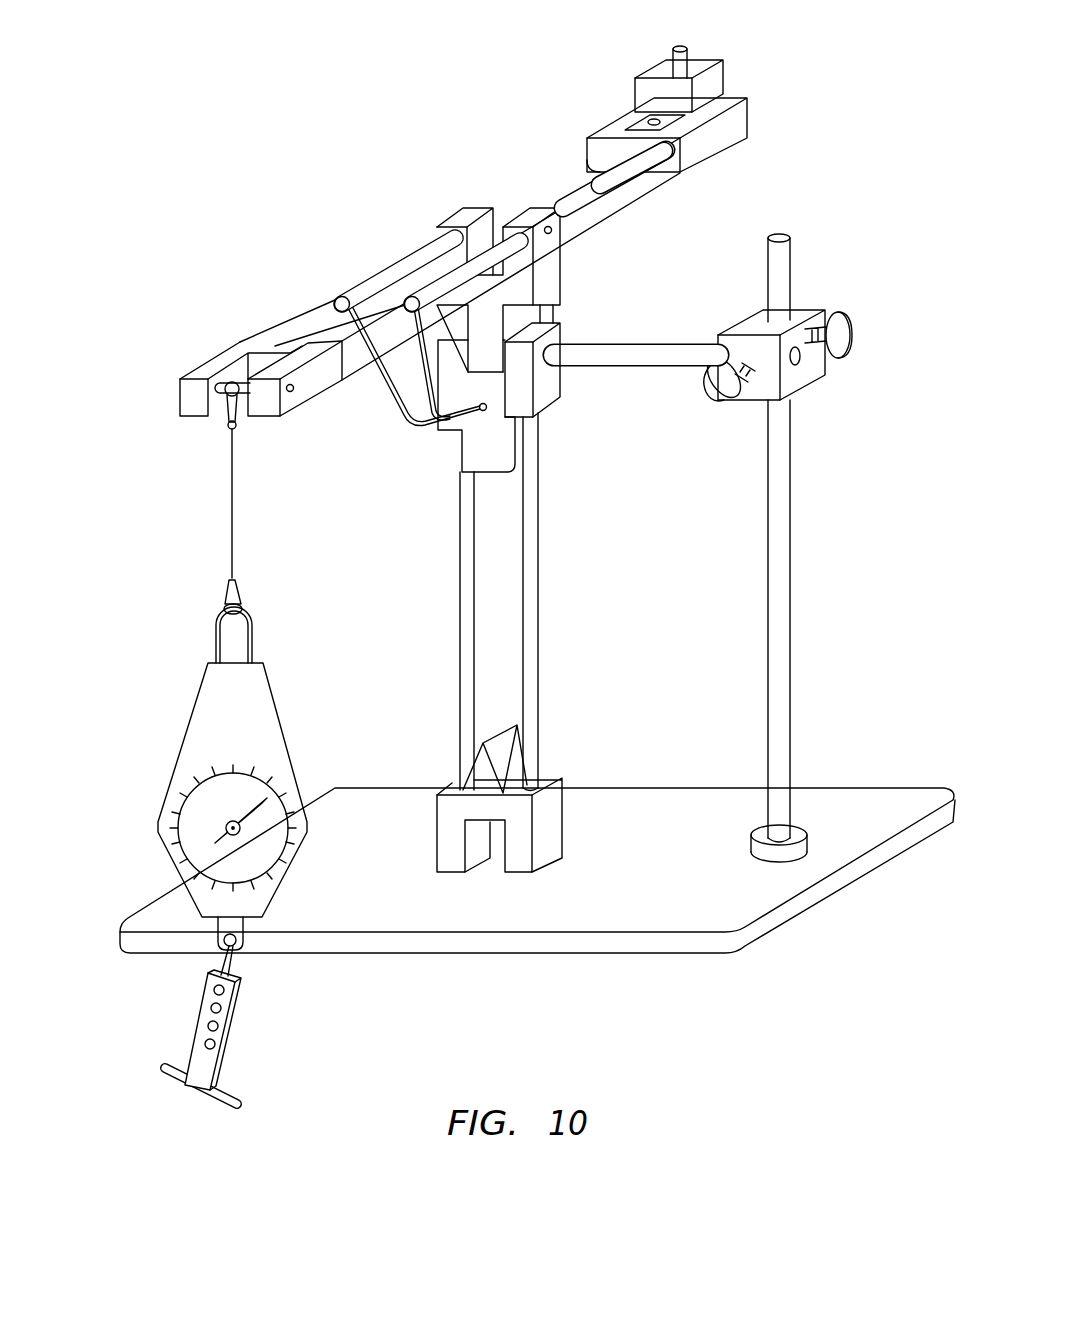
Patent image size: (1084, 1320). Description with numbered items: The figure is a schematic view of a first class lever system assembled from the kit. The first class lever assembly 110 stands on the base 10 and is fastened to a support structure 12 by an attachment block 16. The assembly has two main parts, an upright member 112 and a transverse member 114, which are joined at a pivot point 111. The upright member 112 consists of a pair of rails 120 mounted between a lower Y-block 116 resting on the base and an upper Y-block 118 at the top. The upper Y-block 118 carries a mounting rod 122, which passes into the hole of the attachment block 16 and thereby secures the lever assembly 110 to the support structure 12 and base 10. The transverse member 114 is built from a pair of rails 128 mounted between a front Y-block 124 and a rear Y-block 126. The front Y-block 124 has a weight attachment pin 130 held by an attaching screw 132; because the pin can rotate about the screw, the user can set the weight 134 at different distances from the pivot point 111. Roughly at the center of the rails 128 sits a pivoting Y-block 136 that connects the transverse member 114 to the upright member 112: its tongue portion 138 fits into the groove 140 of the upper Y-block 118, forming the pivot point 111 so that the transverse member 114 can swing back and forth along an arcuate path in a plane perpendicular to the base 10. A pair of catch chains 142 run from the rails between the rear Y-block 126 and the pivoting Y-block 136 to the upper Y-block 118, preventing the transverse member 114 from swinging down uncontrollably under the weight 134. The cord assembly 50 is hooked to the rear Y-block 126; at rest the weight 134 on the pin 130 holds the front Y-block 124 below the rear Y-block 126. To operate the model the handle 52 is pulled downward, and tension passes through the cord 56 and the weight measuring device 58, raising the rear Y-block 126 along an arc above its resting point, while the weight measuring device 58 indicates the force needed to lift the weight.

The base 10 is at (742, 902).
The support structure 12 is at (792, 440).
The attachment block 16 is at (806, 312).
The cord assembly 50 is at (205, 637).
The handle 52 is at (205, 1017).
The cord 56 is at (232, 475).
The weight measuring device 58 is at (258, 713).
The first class lever assembly 110 is at (340, 183).
The pivot point 111 is at (527, 324).
The upright member 112 is at (395, 576).
The transverse member 114 is at (624, 226).
The lower Y-block 116 is at (556, 822).
The upper Y-block 118 is at (485, 465).
The rails 120 is at (472, 587).
The mounting rod 122 is at (698, 346).
The front Y-block 124 is at (735, 130).
The rear Y-block 126 is at (282, 405).
The rails 128 is at (555, 178).
The weight attachment pin 130 is at (686, 56).
The attaching screw 132 is at (642, 118).
The weight 134 is at (722, 80).
The pivoting Y-block 136 is at (466, 215).
The tongue portion 138 is at (488, 352).
The groove 140 is at (470, 373).
The catch chains 142 is at (424, 432).